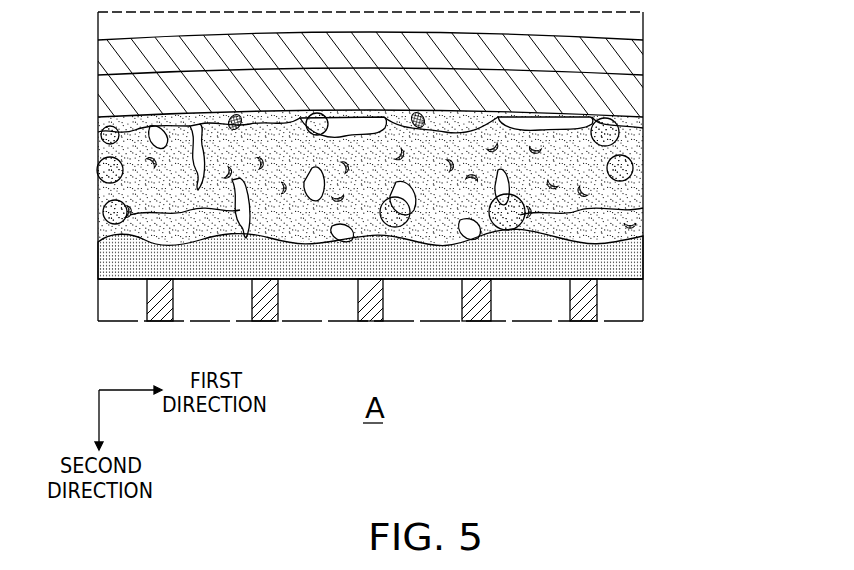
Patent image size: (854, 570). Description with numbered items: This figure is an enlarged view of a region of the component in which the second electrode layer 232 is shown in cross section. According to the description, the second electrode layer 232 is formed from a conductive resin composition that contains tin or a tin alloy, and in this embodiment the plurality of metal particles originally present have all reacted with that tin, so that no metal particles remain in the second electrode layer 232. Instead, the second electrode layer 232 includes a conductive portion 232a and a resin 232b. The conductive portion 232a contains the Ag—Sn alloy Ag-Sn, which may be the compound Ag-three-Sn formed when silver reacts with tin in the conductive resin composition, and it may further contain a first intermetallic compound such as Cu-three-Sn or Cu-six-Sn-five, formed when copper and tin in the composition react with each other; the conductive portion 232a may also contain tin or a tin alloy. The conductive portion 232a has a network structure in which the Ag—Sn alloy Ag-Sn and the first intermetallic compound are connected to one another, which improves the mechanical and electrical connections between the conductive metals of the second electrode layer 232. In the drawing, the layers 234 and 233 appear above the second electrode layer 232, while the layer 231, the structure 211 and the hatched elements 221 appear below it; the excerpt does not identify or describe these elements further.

The cover layer 234 is at (643, 68).
The adhesive layer 233 is at (643, 105).
The second electrode layer 232 is at (447, 176).
The conductive portion 232a is at (627, 193).
The resin 232b is at (632, 147).
The Ag—Sn alloy Ag-Sn is at (642, 223).
The electrode layer 231 is at (435, 263).
The substrate 211 is at (528, 303).
The bus electrode 221 is at (593, 305).